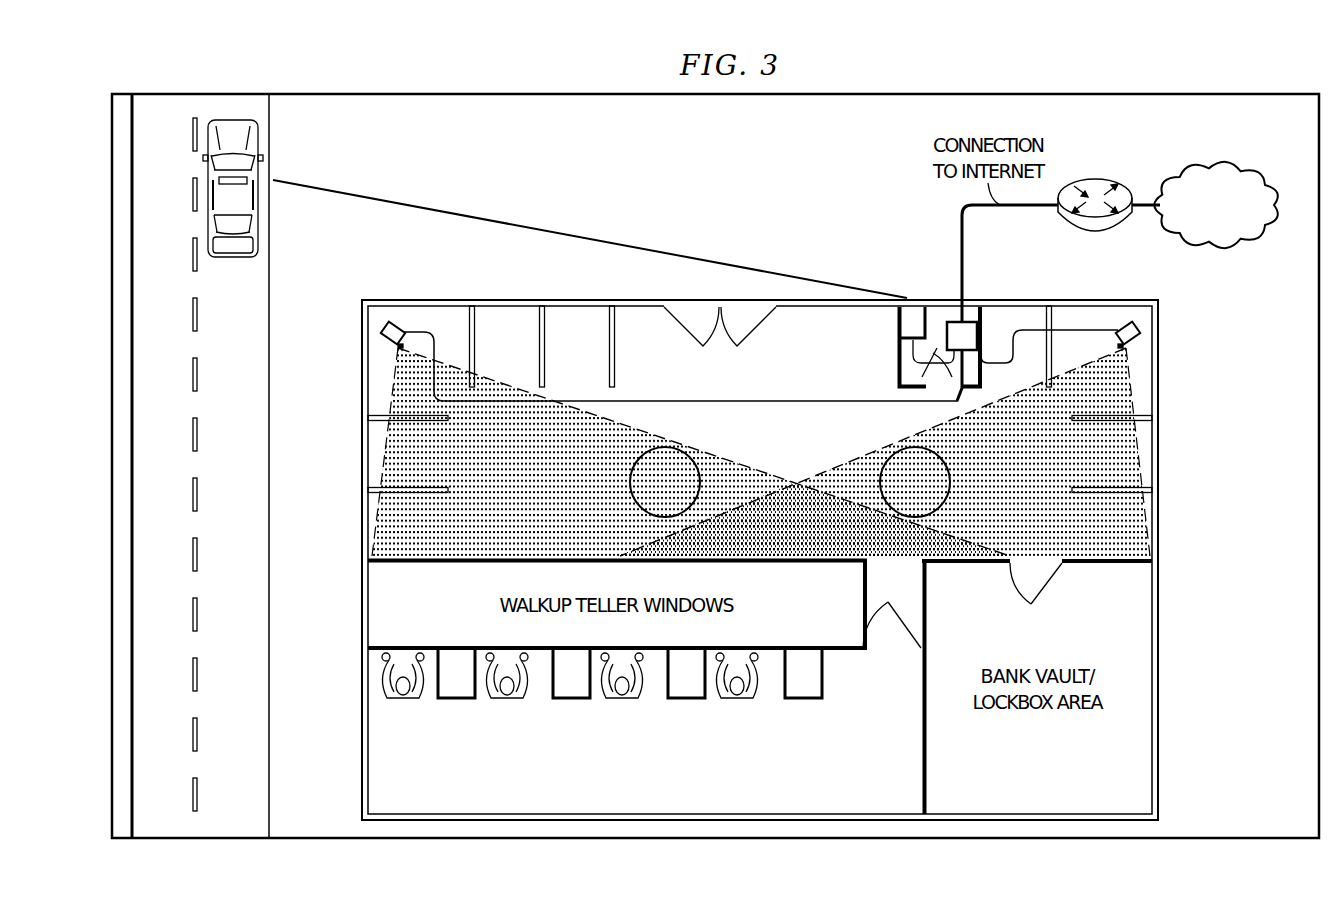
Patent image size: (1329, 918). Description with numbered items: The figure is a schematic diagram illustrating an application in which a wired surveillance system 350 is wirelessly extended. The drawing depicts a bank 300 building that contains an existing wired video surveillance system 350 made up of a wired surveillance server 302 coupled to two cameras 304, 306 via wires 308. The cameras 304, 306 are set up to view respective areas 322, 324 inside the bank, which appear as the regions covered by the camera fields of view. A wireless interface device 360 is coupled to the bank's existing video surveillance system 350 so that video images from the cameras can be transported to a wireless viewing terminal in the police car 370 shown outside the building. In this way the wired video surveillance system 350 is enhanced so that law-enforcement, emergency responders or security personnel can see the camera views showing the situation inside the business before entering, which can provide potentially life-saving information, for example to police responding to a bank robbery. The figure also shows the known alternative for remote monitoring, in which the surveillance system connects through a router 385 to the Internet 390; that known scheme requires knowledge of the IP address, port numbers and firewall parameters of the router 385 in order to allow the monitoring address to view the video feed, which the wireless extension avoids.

The bank 300 is at (482, 72).
The police car 370 is at (208, 218).
The camera 304 is at (388, 323).
The camera 306 is at (1130, 322).
The wires 308 is at (665, 400).
The wired surveillance system 350 is at (889, 328).
The wireless interface device 360 is at (918, 313).
The wired surveillance server 302 is at (972, 337).
The router 385 is at (1098, 180).
The Internet 390 is at (1250, 168).
The area 322 is at (560, 494).
The area 324 is at (1033, 494).